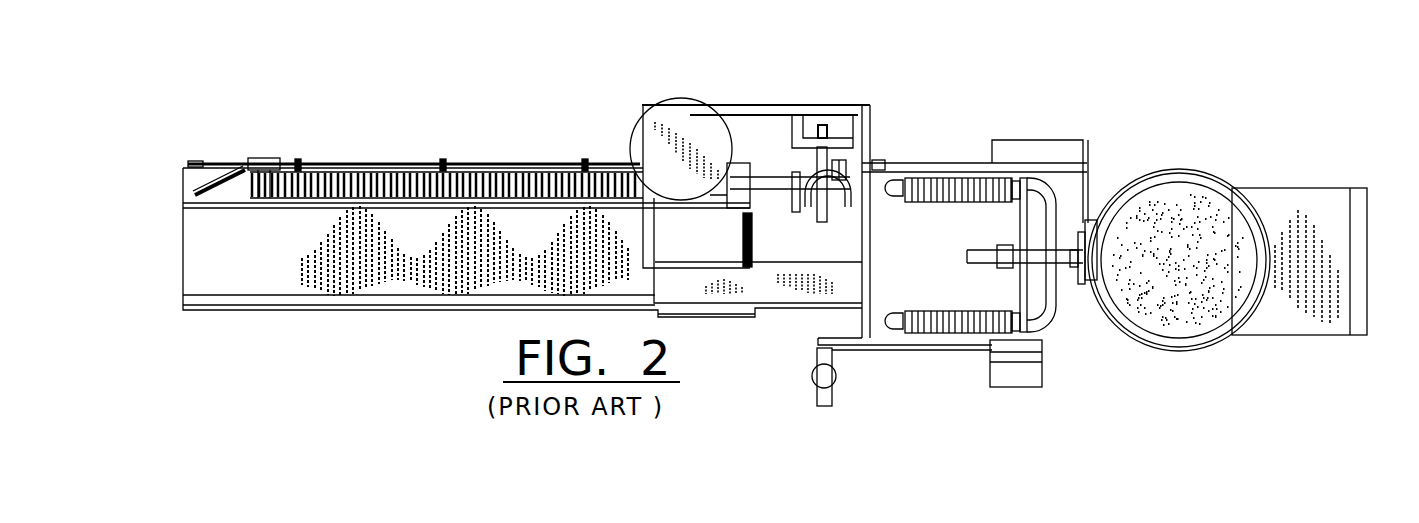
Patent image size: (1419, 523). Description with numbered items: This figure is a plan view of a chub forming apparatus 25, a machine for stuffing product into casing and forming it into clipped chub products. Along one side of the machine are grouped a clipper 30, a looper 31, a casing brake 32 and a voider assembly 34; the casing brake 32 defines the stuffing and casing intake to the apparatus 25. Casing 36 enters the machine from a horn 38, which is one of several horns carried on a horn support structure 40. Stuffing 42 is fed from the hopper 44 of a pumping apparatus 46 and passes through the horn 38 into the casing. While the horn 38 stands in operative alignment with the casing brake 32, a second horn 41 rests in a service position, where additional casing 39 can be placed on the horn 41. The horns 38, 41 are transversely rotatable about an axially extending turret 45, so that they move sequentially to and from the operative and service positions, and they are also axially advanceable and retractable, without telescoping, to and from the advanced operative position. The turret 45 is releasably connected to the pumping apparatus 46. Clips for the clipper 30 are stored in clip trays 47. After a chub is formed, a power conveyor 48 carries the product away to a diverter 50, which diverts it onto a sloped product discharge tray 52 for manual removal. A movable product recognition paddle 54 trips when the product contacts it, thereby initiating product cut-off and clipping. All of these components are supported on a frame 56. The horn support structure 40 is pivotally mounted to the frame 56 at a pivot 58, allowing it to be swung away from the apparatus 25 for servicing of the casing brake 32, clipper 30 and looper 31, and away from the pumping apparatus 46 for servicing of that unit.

The apparatus 25 is at (916, 80).
The clipper 30 is at (818, 158).
The looper 31 is at (853, 167).
The casing brake 32 is at (852, 212).
The voider assembly 34 is at (807, 168).
The casing 36 is at (928, 200).
The horn 38 is at (930, 173).
The additional casing 39 is at (935, 333).
The horn support structure 40 is at (1040, 315).
The horn 41 is at (896, 322).
The stuffing 42 is at (1212, 213).
The hopper 44 is at (1250, 322).
The turret 45 is at (1083, 170).
The pumping apparatus 46 is at (1360, 220).
The clip trays 47 is at (694, 115).
The power conveyor 48 is at (477, 187).
The diverter 50 is at (247, 170).
The product discharge tray 52 is at (350, 287).
The product recognition paddle 54 is at (265, 160).
The frame 56 is at (840, 105).
The pivot 58 is at (876, 170).